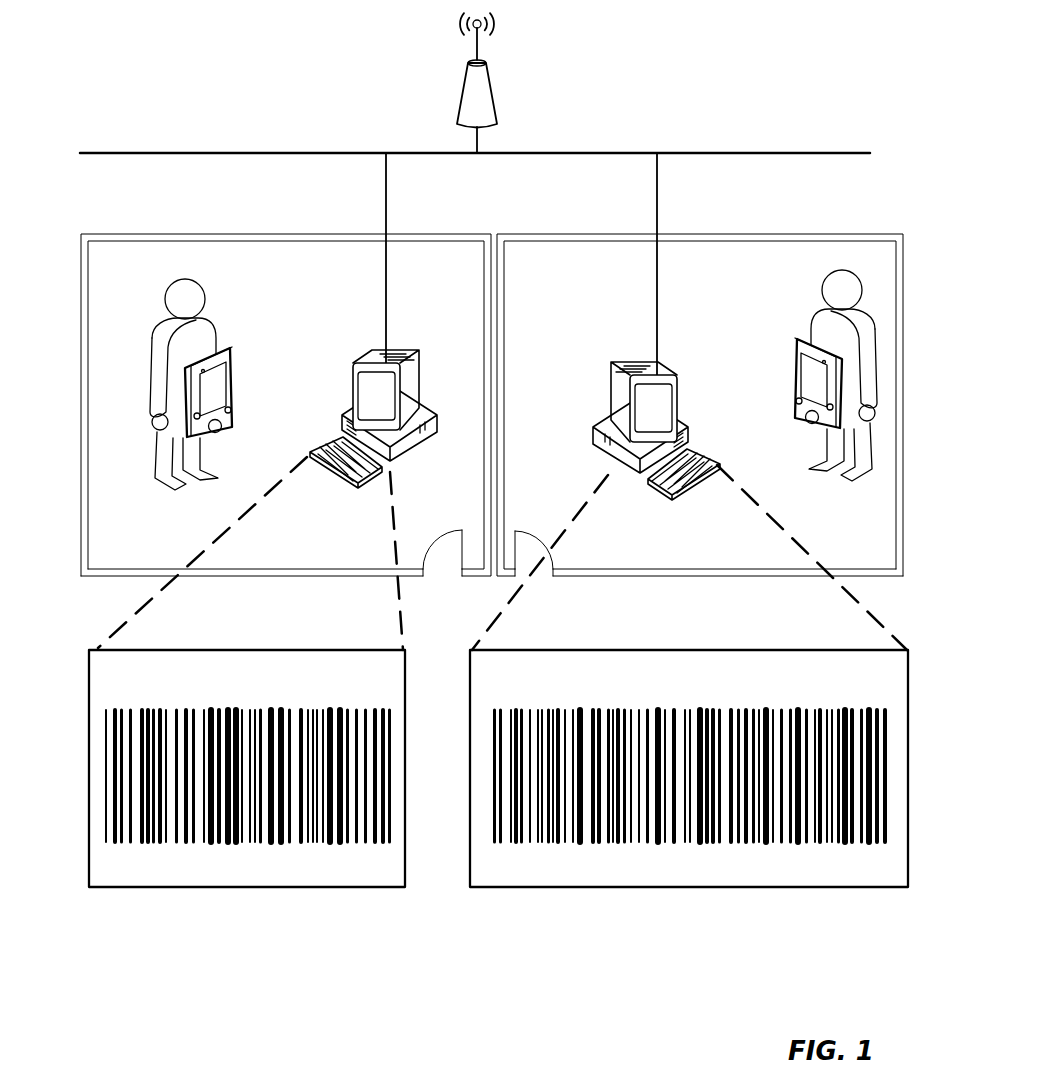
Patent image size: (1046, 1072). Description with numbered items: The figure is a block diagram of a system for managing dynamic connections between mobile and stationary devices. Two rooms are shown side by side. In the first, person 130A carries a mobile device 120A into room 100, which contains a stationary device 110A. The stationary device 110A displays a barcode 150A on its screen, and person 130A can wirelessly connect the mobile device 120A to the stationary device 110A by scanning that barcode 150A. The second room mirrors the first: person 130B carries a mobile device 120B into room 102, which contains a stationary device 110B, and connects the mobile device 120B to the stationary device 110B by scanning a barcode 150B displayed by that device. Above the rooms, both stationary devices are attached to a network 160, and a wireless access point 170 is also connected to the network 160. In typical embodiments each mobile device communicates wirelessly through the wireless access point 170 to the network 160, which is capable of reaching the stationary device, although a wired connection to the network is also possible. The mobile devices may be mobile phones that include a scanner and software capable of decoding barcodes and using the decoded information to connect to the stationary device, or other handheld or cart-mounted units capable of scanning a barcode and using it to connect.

The room 100 is at (183, 233).
The room 102 is at (672, 233).
The stationary device 110A is at (393, 365).
The stationary device 110B is at (607, 393).
The mobile device 120A is at (238, 382).
The mobile device 120B is at (793, 373).
The person 130A is at (212, 323).
The person 130B is at (817, 315).
The barcode 150A is at (212, 705).
The barcode 150B is at (625, 708).
The network 160 is at (550, 153).
The wireless access point 170 is at (492, 90).